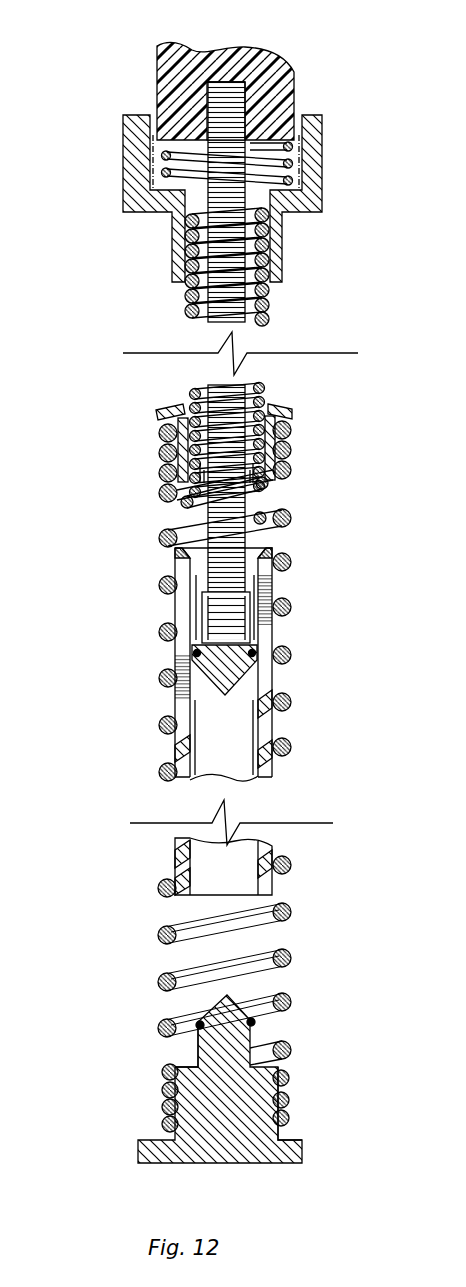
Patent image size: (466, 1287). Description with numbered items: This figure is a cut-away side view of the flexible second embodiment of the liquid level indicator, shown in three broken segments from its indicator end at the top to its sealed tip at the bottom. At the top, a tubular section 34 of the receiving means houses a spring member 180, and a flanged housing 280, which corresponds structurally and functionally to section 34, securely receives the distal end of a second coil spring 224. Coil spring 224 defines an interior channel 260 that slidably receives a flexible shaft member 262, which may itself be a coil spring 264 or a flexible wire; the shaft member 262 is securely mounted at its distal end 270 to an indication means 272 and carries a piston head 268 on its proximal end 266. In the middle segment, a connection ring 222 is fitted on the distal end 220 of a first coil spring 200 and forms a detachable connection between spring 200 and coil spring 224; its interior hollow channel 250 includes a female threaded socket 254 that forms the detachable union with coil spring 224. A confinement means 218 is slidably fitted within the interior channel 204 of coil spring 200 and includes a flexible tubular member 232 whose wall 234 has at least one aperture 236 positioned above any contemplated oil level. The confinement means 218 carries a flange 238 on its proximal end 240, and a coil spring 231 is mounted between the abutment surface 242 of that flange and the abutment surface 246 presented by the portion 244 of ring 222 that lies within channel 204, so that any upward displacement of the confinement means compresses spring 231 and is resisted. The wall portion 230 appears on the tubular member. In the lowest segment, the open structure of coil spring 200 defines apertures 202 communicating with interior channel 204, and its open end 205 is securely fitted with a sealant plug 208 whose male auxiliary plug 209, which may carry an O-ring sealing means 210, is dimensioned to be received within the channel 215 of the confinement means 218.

The distal end 270 is at (243, 82).
The indication means 272 is at (288, 98).
The spring member 180 is at (290, 163).
The tubular section 34 is at (325, 196).
The flanged housing 280 is at (122, 198).
The flexible shaft member 262 is at (283, 213).
The coil spring 264 is at (268, 273).
The second coil spring 224 is at (258, 310).
The interior channel 260 is at (245, 318).
The female threaded socket 254 is at (188, 396).
The connection ring 222 is at (267, 403).
The distal end 220 is at (290, 425).
The portion 244 is at (291, 448).
The hollow channel 250 is at (200, 477).
The abutment surface 246 is at (268, 493).
The coil spring 231 is at (187, 530).
The abutment surface 242 is at (250, 550).
The proximal end 240 is at (172, 548).
The flange 238 is at (268, 550).
The first coil spring 200 is at (291, 608).
The piston head 268 is at (243, 640).
The aperture 236 is at (180, 656).
The proximal end 266 is at (250, 640).
The confinement means 218 is at (265, 712).
The channel 215 is at (230, 743).
The flexible tubular member 232 is at (180, 742).
The wall portion 230 is at (272, 772).
The wall 234 is at (178, 754).
The apertures 202 is at (253, 947).
The interior channel 204 is at (175, 956).
The sealing means 210 is at (255, 1026).
The sealant plug 208 is at (243, 1102).
The open end 205 is at (280, 1137).
The male auxiliary plug 209 is at (207, 1037).